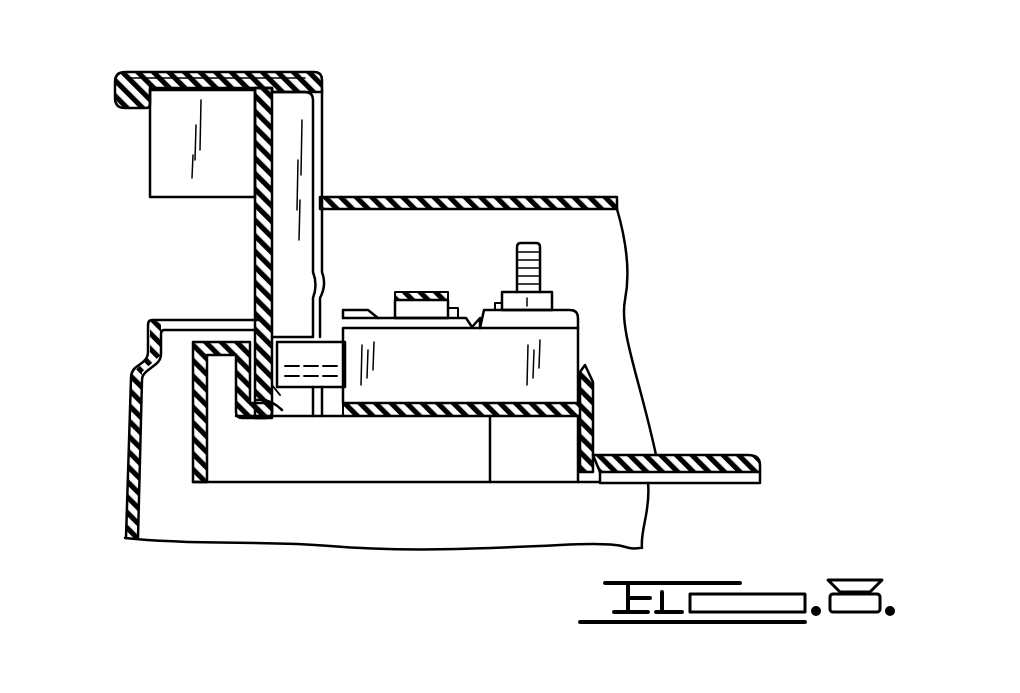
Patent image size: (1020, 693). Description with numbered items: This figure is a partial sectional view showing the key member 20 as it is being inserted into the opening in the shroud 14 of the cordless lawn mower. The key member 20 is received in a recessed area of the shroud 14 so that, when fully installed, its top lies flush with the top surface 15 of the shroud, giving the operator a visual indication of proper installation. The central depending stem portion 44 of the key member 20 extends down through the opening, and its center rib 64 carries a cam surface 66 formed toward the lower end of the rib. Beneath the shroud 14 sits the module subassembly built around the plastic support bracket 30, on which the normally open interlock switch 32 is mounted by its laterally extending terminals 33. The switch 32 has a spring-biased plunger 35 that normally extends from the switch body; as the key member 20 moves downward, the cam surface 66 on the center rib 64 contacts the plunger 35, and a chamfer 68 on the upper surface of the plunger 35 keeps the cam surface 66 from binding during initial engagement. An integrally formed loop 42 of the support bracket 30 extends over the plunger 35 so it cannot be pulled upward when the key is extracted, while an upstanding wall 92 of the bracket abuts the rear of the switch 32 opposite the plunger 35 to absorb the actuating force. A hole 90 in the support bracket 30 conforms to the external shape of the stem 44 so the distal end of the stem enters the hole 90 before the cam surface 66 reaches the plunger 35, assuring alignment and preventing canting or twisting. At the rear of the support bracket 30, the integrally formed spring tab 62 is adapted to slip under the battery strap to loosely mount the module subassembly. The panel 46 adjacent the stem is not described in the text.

The shroud 14 is at (126, 410).
The top surface of the shroud 15 is at (508, 197).
The key member 20 is at (300, 62).
The support bracket 30 is at (187, 466).
The interlock switch 32 is at (567, 345).
The terminals 33 is at (555, 299).
The plunger 35 is at (428, 292).
The loop 42 is at (352, 322).
The stem portion 44 is at (255, 246).
The side panel 46 is at (162, 140).
The spring tab 62 is at (735, 455).
The center rib 64 is at (320, 135).
The cam surface 66 is at (272, 385).
The chamfer 68 is at (278, 366).
The hole 90 is at (268, 405).
The upstanding wall 92 is at (594, 384).